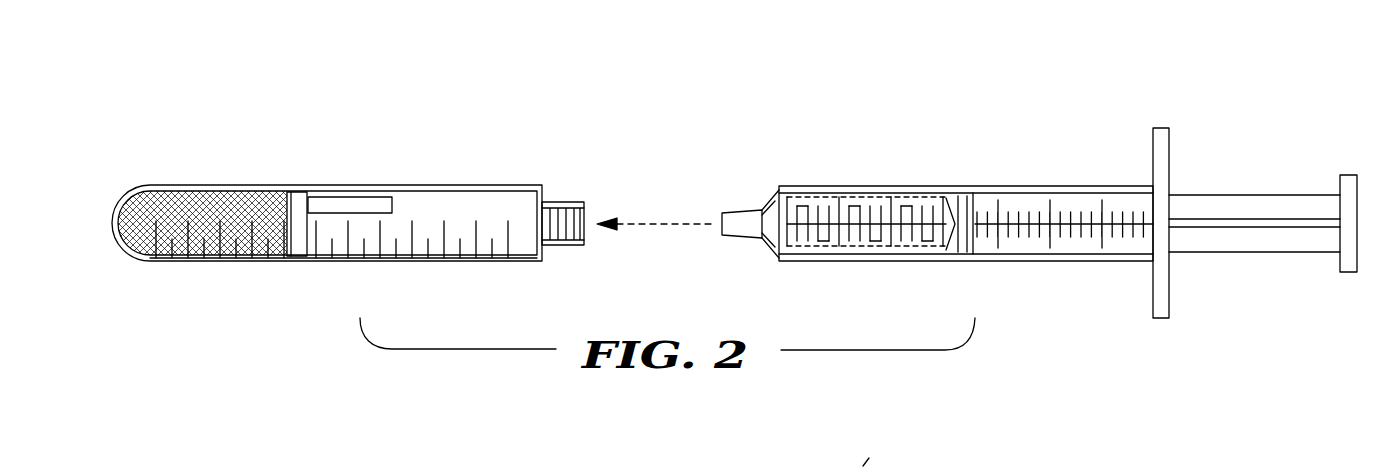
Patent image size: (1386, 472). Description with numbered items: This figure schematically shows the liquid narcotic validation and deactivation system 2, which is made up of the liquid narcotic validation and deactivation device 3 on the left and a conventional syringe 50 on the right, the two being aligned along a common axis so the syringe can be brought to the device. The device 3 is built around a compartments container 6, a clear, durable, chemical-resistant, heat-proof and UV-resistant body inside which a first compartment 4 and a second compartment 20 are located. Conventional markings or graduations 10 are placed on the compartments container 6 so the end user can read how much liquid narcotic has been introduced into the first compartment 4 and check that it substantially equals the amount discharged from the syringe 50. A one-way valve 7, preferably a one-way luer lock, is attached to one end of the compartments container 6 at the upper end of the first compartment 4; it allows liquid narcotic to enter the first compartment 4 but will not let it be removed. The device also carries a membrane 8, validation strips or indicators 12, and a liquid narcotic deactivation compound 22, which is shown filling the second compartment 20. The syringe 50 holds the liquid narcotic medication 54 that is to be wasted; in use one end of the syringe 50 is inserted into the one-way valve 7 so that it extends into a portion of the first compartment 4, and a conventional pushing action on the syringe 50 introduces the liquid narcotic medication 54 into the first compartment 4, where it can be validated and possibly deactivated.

The liquid narcotic validation and deactivation system 2 is at (830, 75).
The liquid narcotic validation and deactivation device 3 is at (563, 118).
The first compartment 4 is at (430, 163).
The compartments container 6 is at (453, 262).
The one-way valve 7 is at (562, 202).
The membrane 8 is at (292, 259).
The markings or graduations 10 is at (354, 272).
The validation strips or indicators 12 is at (329, 203).
The second compartment 20 is at (192, 148).
The deactivation compound 22 is at (195, 259).
The syringe 50 is at (1030, 112).
The liquid narcotic medication 54 is at (868, 196).